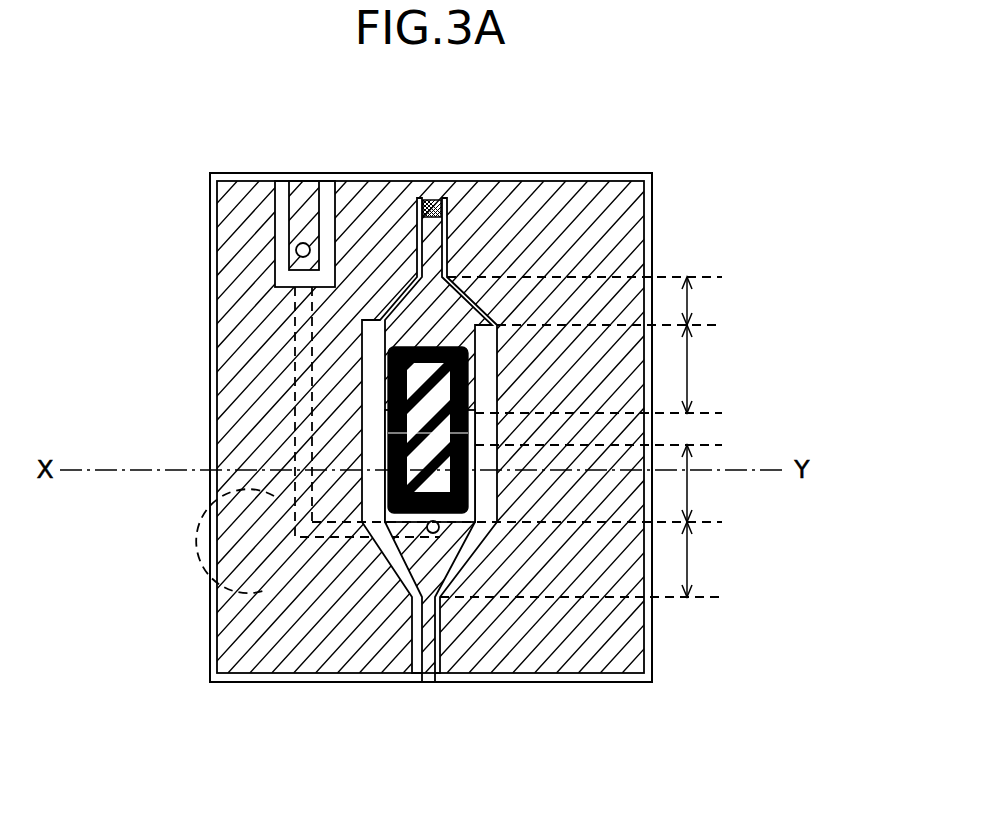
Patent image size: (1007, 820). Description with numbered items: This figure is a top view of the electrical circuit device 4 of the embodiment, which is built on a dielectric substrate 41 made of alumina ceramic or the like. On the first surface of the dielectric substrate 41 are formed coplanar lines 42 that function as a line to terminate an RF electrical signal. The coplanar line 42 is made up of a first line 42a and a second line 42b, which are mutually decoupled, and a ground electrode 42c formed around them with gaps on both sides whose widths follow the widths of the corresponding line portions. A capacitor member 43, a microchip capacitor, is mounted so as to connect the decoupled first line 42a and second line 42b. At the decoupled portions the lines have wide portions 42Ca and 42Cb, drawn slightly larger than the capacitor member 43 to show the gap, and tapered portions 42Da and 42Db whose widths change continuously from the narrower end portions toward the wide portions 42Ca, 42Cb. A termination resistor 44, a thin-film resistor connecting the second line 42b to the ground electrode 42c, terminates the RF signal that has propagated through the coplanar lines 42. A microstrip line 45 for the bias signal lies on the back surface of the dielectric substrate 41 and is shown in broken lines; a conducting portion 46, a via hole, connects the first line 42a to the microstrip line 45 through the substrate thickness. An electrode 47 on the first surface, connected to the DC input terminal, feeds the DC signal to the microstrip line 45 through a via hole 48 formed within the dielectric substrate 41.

The electrical circuit device 4 is at (660, 187).
The dielectric substrate 41 is at (335, 179).
The coplanar lines 42 is at (603, 570).
The first line 42a is at (420, 690).
The second line 42b is at (427, 223).
The ground electrode 42c is at (310, 645).
The wide portion 42Ca is at (538, 483).
The wide portion 42Cb is at (620, 369).
The tapered portion 42Da is at (603, 559).
The tapered portion 42Db is at (607, 301).
The capacitor member 43 is at (398, 428).
The termination resistor 44 is at (443, 198).
The microstrip line 45 is at (250, 574).
The conducting portion 46 is at (438, 531).
The electrode 47 is at (312, 182).
The via hole 48 is at (301, 243).